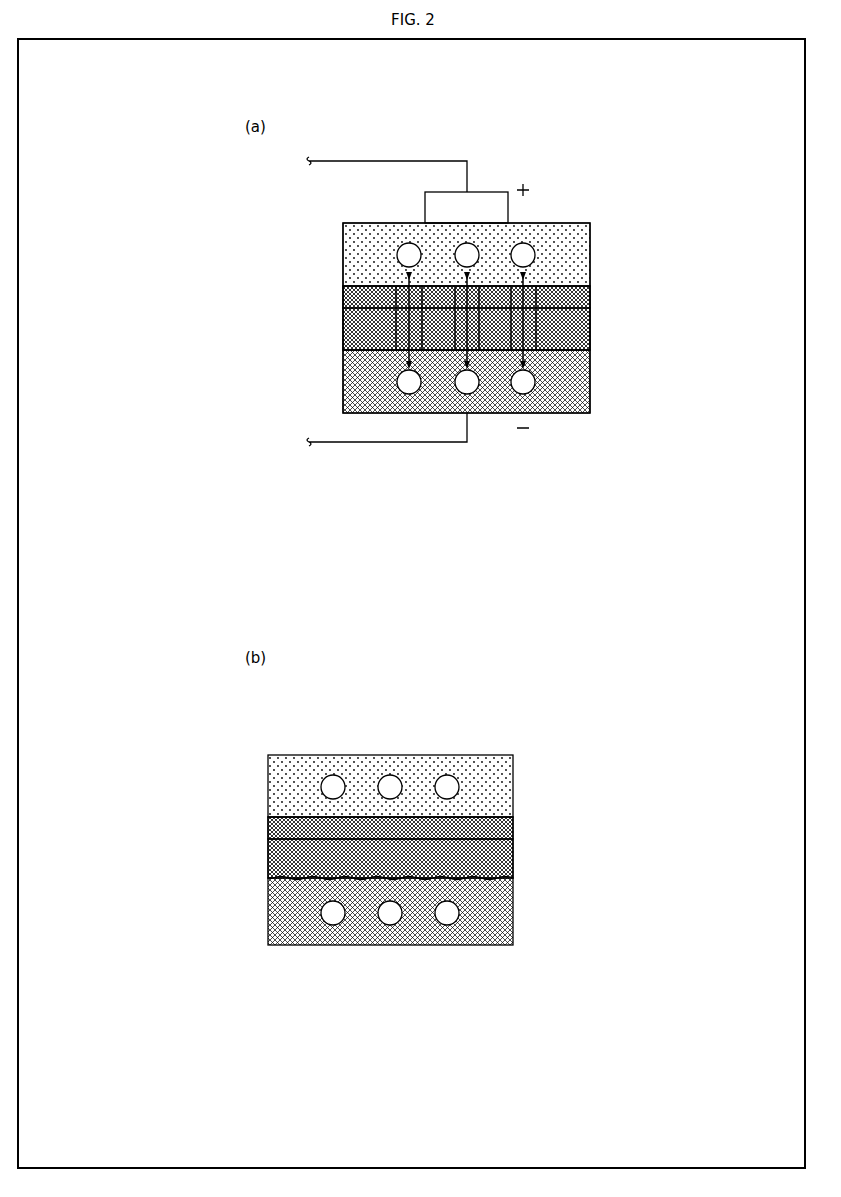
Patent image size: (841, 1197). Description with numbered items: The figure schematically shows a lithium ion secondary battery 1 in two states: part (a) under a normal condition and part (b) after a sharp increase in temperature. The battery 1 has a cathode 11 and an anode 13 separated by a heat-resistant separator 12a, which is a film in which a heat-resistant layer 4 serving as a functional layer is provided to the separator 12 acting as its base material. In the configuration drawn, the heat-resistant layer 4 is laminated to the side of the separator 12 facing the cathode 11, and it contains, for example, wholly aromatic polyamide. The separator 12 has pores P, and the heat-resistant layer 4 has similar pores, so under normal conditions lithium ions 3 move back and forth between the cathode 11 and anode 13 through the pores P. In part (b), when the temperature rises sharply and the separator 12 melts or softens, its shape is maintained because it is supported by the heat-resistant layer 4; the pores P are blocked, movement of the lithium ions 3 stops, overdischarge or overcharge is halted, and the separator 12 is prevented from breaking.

The lithium ion secondary battery 1 is at (263, 223).
The lithium ions 3 is at (409, 244).
The heat-resistant layer 4 is at (341, 297).
The cathode 11 is at (341, 257).
The separator 12 is at (341, 336).
The heat-resistant separator 12a is at (306, 288).
The anode 13 is at (341, 383).
The pores P is at (430, 297).